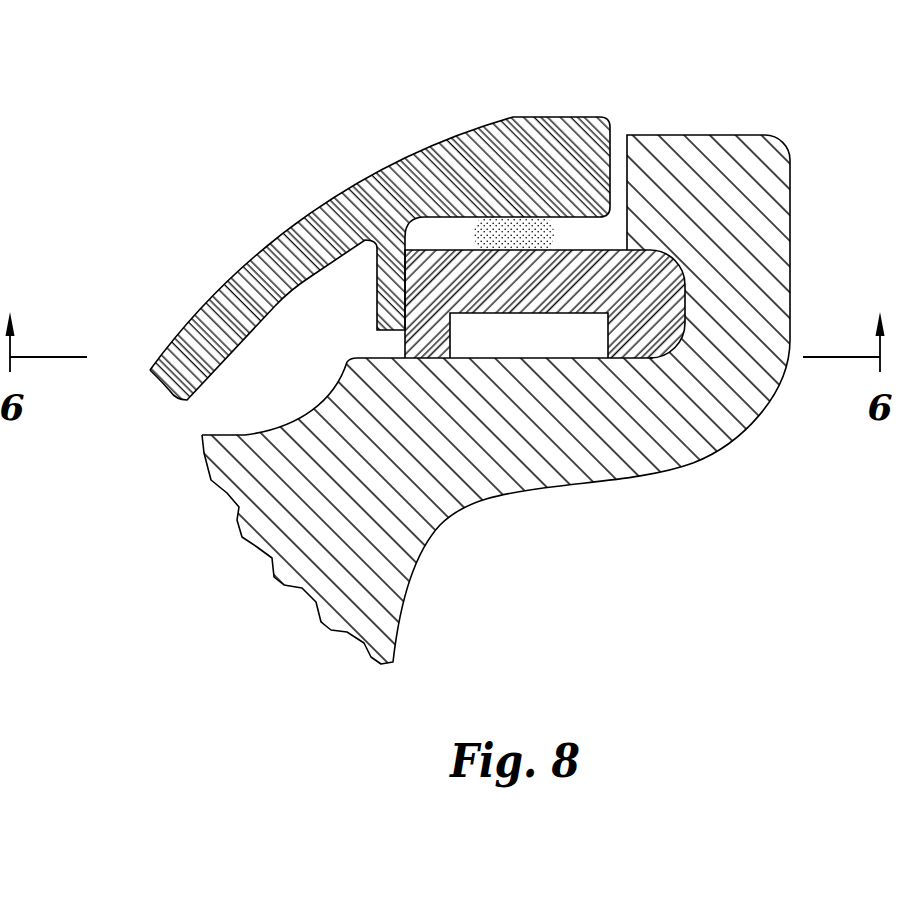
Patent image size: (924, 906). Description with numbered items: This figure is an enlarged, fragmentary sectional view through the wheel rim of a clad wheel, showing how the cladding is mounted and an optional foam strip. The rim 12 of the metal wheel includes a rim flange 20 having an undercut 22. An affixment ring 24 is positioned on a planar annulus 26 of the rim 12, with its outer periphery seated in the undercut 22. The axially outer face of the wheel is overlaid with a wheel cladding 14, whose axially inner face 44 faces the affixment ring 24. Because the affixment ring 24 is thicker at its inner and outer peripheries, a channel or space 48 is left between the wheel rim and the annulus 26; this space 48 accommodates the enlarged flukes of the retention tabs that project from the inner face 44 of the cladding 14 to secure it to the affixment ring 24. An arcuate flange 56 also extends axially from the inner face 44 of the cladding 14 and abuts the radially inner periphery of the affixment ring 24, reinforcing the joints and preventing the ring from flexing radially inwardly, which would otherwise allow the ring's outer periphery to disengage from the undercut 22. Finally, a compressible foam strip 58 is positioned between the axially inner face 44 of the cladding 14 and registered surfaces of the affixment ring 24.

The rim 12 is at (507, 497).
The wheel cladding 14 is at (297, 224).
The rim flange 20 is at (791, 225).
The undercut 22 is at (633, 404).
The affixment ring 24 is at (581, 328).
The planar annulus 26 is at (378, 357).
The inner face 44 is at (232, 354).
The channel or space 48 is at (553, 345).
The arcuate flange 56 is at (378, 286).
The compressible foam strip 58 is at (507, 227).